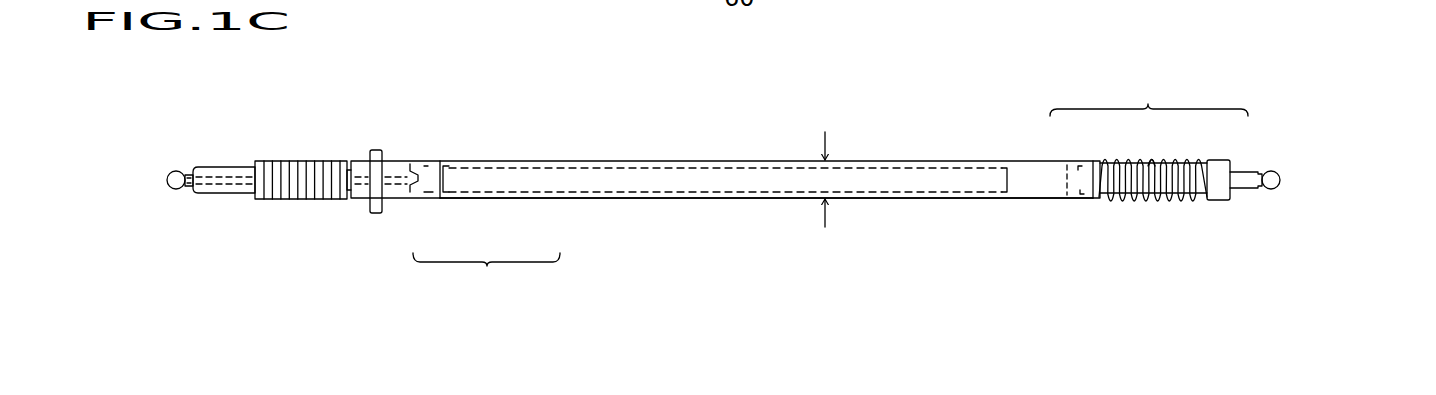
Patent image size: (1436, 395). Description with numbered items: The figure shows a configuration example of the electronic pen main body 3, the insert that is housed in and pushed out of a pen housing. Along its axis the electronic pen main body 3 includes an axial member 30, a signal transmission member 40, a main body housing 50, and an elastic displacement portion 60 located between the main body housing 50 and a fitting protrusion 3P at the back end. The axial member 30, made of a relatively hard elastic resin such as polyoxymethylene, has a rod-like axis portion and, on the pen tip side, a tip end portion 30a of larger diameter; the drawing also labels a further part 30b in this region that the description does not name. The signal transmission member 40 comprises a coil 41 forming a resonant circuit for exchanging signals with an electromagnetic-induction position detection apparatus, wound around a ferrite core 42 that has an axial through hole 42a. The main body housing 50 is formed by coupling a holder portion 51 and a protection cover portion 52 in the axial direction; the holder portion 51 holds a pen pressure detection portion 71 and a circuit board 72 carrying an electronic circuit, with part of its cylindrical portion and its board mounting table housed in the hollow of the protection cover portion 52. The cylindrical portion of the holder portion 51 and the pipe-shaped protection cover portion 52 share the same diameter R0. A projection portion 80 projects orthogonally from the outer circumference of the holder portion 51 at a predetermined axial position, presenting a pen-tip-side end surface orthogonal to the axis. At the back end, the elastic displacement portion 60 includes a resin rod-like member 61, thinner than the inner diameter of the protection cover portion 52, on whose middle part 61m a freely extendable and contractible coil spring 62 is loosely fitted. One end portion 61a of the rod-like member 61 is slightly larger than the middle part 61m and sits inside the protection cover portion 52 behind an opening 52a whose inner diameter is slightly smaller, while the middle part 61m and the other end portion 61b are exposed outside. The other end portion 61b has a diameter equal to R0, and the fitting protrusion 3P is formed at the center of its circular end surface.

The electronic pen main body 3 is at (477, 156).
The fitting protrusion 3P is at (1250, 188).
The axial member 30 is at (190, 166).
The tip end portion 30a is at (177, 190).
The stepped portion 30b is at (411, 166).
The signal transmission member 40 is at (297, 203).
The coil 41 is at (308, 160).
The ferrite core 42 is at (220, 167).
The through hole 42a is at (240, 177).
The main body housing 50 is at (486, 278).
The holder portion 51 is at (428, 198).
The protection cover portion 52 is at (545, 197).
The opening 52a is at (1093, 200).
The elastic displacement portion 60 is at (1137, 205).
The rod-like member 61 is at (1149, 93).
The one end portion 61a is at (1075, 178).
The middle part 61m is at (1150, 176).
The other end portion 61b is at (1218, 170).
The coil spring 62 is at (1173, 200).
The pen pressure detection portion 71 is at (428, 166).
The circuit board 72 is at (660, 190).
The projection portion 80 is at (375, 150).
The diameter R0 is at (828, 181).